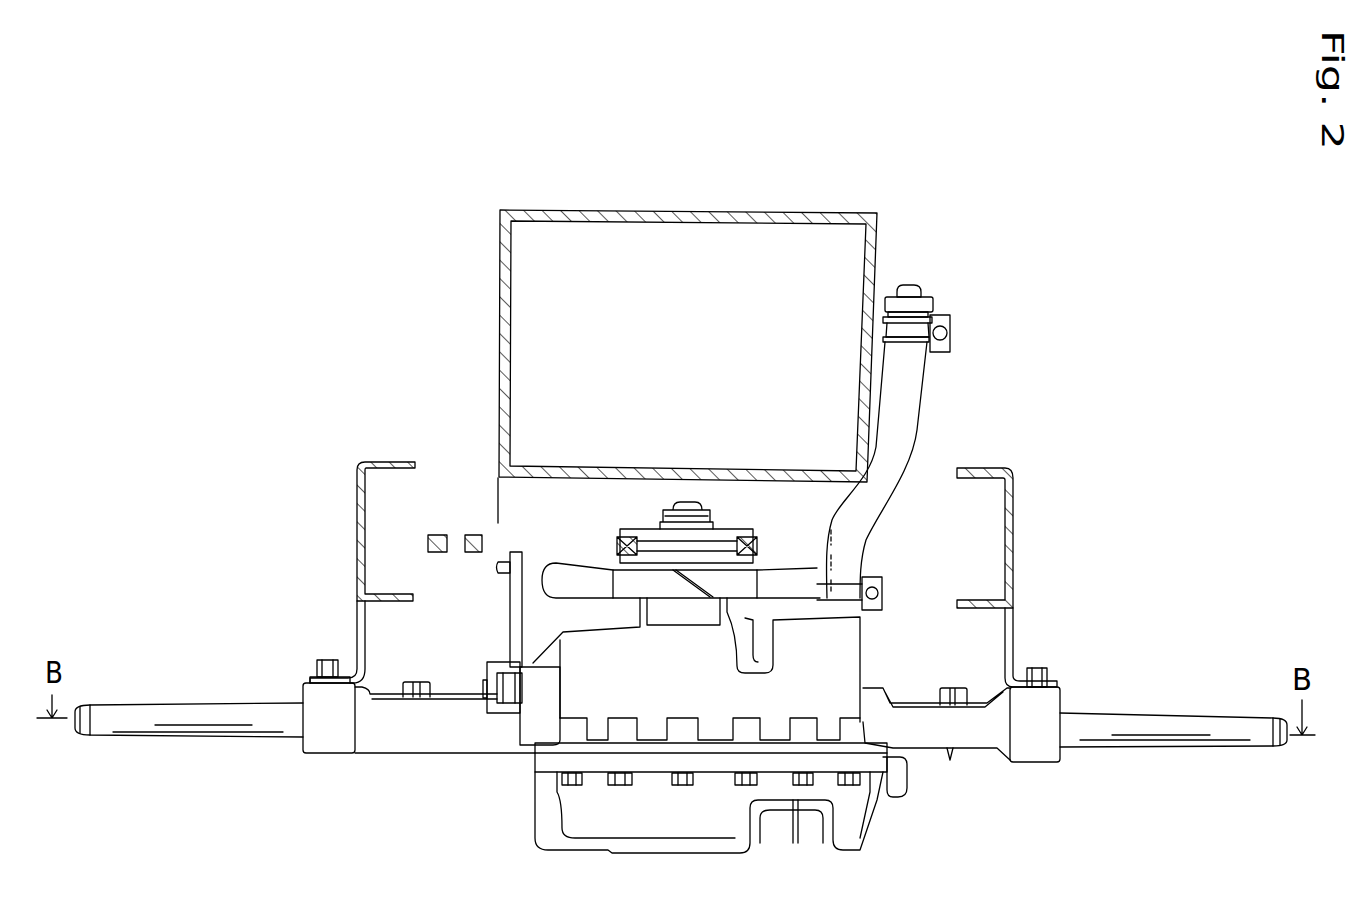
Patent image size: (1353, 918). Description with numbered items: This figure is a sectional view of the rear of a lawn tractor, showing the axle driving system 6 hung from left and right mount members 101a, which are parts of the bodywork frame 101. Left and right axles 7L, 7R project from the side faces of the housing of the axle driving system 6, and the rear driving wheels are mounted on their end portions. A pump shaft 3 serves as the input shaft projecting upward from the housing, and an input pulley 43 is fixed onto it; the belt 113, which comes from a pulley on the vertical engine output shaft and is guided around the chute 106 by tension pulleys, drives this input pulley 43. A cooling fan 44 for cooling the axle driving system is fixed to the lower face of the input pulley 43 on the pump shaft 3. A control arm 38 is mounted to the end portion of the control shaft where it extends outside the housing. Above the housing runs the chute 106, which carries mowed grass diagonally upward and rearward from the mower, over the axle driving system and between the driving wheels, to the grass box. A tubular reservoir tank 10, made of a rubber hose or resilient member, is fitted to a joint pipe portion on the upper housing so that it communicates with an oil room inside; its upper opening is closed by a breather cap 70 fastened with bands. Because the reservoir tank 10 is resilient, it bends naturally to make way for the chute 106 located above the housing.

The chute 106 is at (659, 211).
The breather cap 70 is at (925, 288).
The reservoir tank 10 is at (915, 391).
The pump shaft 3 is at (699, 500).
The input pulley 43 is at (740, 530).
The cooling fan 44 is at (573, 563).
The belt 113 is at (474, 535).
The bodywork frame 101 is at (355, 510).
The mount members 101a is at (357, 632).
The control arm 38 is at (508, 620).
The left axle 7L is at (163, 703).
The right axle 7R is at (1143, 713).
The axle driving system 6 is at (907, 800).